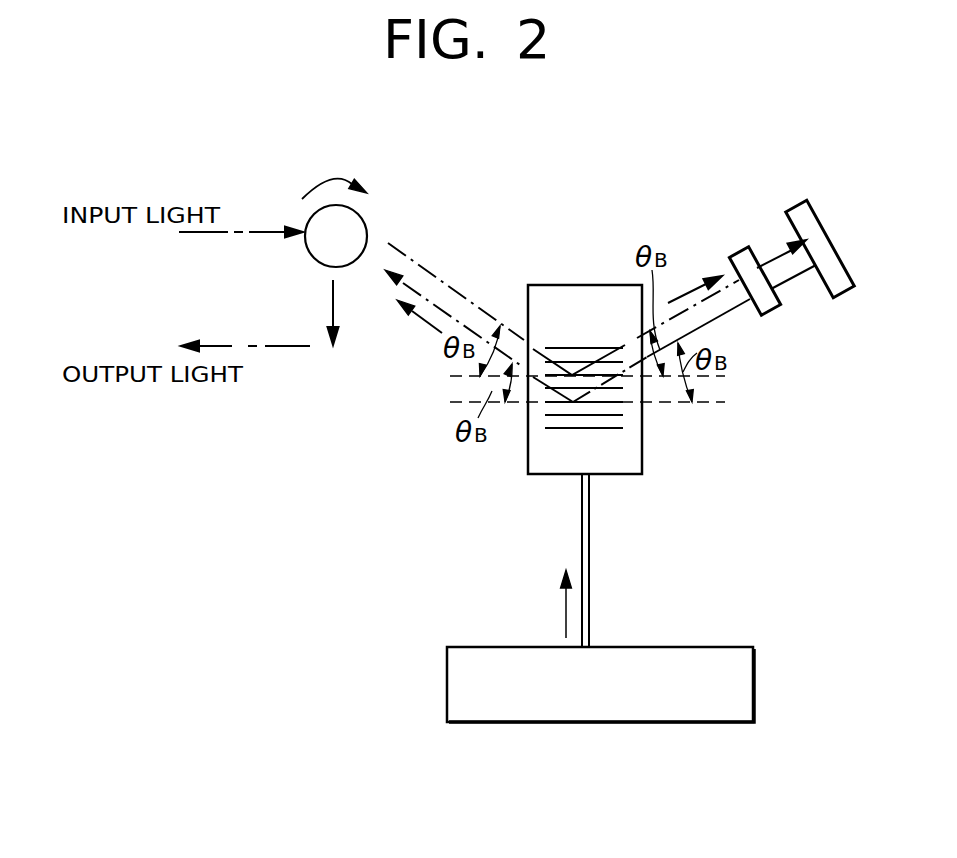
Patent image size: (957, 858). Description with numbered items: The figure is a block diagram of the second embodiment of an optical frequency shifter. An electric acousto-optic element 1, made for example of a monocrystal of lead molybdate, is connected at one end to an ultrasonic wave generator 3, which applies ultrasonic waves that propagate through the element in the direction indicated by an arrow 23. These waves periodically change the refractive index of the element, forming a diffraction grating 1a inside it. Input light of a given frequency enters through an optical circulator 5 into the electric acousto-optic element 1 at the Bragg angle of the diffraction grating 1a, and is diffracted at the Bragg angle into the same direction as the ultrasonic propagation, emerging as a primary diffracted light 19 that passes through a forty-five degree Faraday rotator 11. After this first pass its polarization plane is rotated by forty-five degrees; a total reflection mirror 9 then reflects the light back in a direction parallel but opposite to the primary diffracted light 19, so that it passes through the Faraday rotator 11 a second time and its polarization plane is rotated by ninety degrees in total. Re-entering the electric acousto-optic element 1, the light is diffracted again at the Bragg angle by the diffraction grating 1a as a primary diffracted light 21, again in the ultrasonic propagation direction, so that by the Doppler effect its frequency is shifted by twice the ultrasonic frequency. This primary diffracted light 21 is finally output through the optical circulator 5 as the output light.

The electric acousto-optic element 1 is at (643, 459).
The diffraction grating 1a is at (614, 418).
The ultrasonic wave generator 3 is at (447, 680).
The optical circulator 5 is at (307, 221).
The total reflection mirror 9 is at (830, 230).
The 45° Faraday rotator 11 is at (773, 313).
The primary diffracted light 19 is at (690, 290).
The primary diffracted light 21 is at (422, 321).
The arrow 23 is at (565, 604).